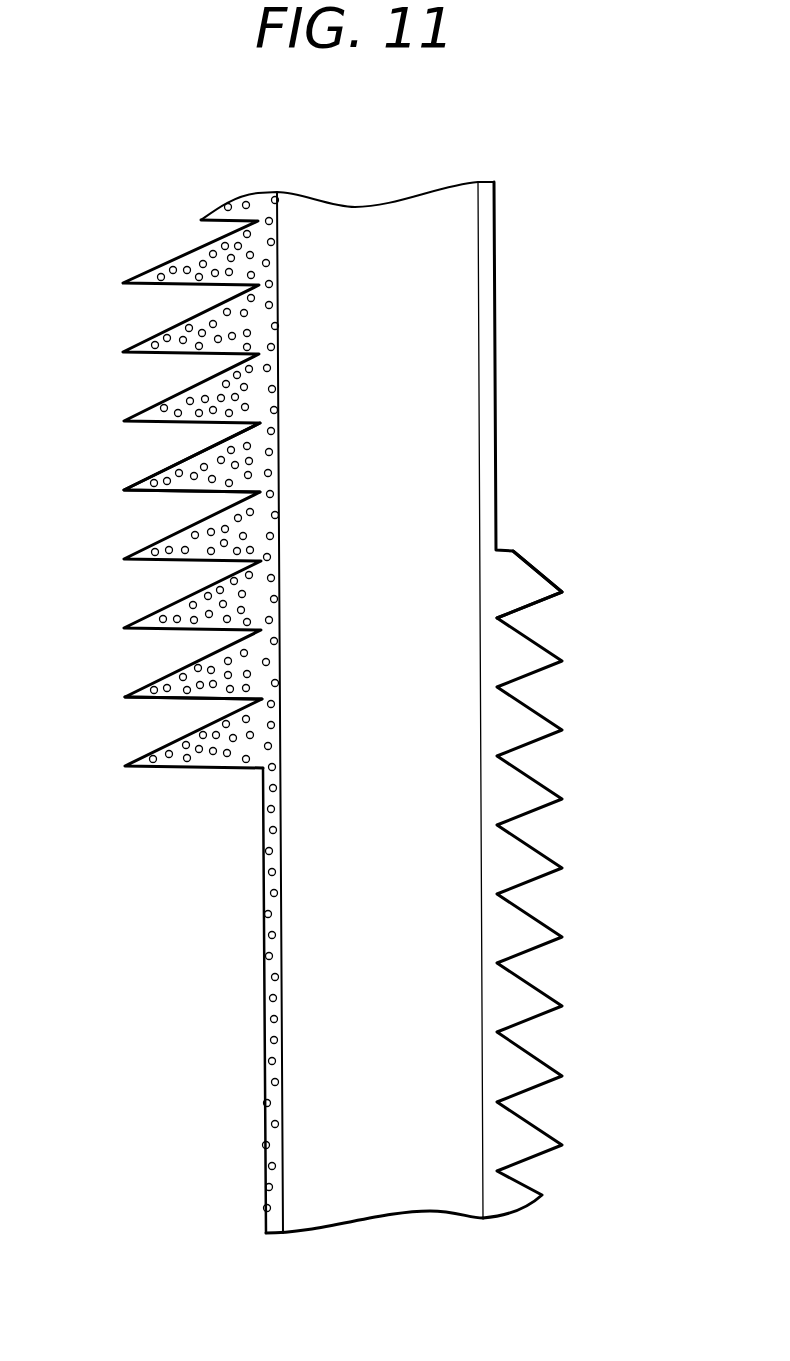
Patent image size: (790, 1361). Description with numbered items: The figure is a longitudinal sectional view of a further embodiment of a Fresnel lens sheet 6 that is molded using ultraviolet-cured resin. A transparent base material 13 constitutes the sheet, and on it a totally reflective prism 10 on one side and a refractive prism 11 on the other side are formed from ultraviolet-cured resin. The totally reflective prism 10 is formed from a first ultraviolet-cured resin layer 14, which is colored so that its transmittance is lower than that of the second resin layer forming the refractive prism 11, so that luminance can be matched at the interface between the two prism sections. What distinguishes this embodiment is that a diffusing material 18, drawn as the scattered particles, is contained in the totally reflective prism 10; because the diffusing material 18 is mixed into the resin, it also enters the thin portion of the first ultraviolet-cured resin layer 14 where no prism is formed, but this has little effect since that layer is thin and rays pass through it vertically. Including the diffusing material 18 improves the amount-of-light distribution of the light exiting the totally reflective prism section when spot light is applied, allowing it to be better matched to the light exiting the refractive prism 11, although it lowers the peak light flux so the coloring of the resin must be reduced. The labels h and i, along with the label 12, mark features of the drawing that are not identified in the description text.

The Fresnel lens sheet 6 is at (432, 187).
The totally reflective prism 10 is at (173, 260).
The diffusing material 18 is at (177, 475).
The projection height h is at (172, 700).
The first ultraviolet-cured resin layer 14 is at (273, 903).
The support layer 12 is at (267, 1102).
The refractive prism 11 is at (545, 1125).
The serration height i is at (540, 572).
The transparent base material 13 is at (355, 1210).